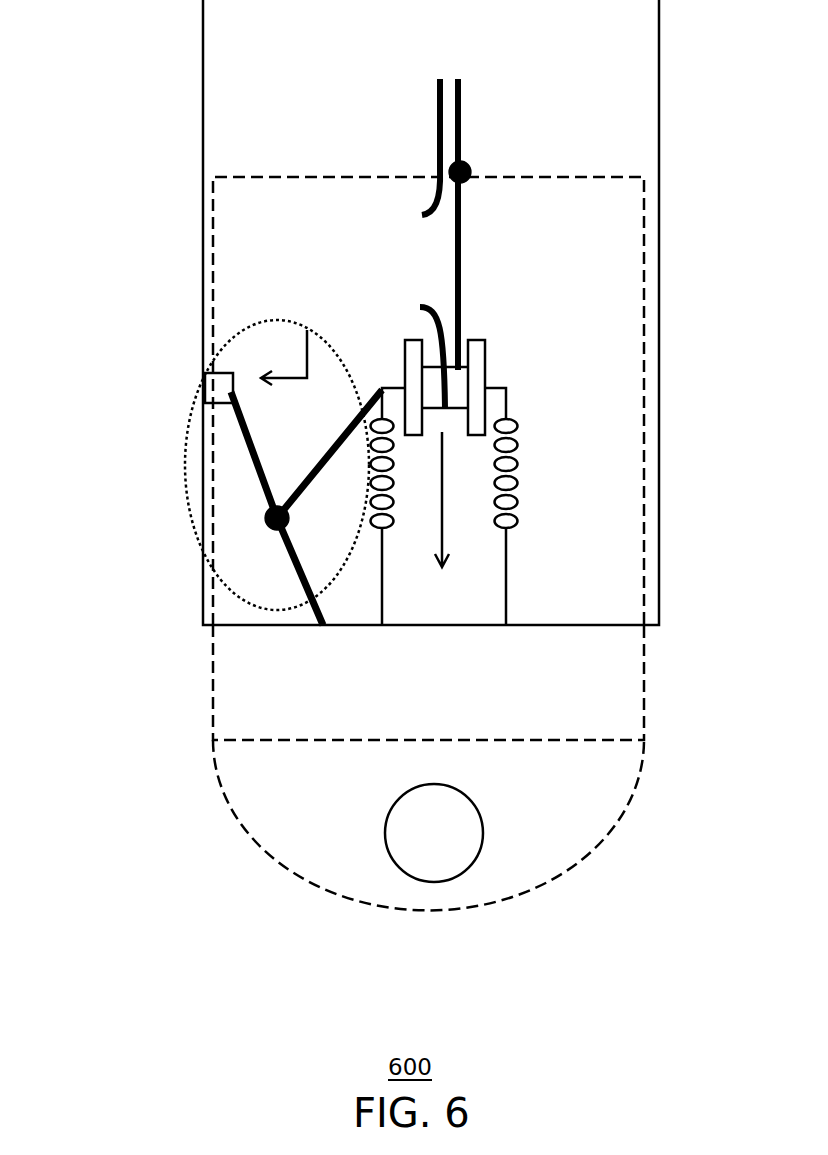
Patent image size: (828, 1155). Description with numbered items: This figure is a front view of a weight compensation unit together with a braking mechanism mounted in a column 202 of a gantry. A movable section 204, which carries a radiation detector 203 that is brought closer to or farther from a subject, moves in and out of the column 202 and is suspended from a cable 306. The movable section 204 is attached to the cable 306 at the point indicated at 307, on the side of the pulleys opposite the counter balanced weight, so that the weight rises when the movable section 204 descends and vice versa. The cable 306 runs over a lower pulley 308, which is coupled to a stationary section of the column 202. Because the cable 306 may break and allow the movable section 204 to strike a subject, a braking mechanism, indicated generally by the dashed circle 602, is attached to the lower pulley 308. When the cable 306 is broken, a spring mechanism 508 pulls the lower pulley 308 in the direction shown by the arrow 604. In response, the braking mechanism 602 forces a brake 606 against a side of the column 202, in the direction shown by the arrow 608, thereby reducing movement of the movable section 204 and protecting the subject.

The column 202 is at (203, 192).
The radiation detector 203 is at (393, 812).
The movable section 204 is at (213, 688).
The cable 306 is at (440, 118).
The attachment point 307 is at (466, 163).
The lower pulley 308 is at (487, 350).
The spring mechanism 508 is at (518, 461).
The braking mechanism 602 is at (188, 497).
The arrow indicating pulling direction 604 is at (442, 520).
The brake 606 is at (217, 388).
The arrow indicating brake movement direction 608 is at (307, 330).